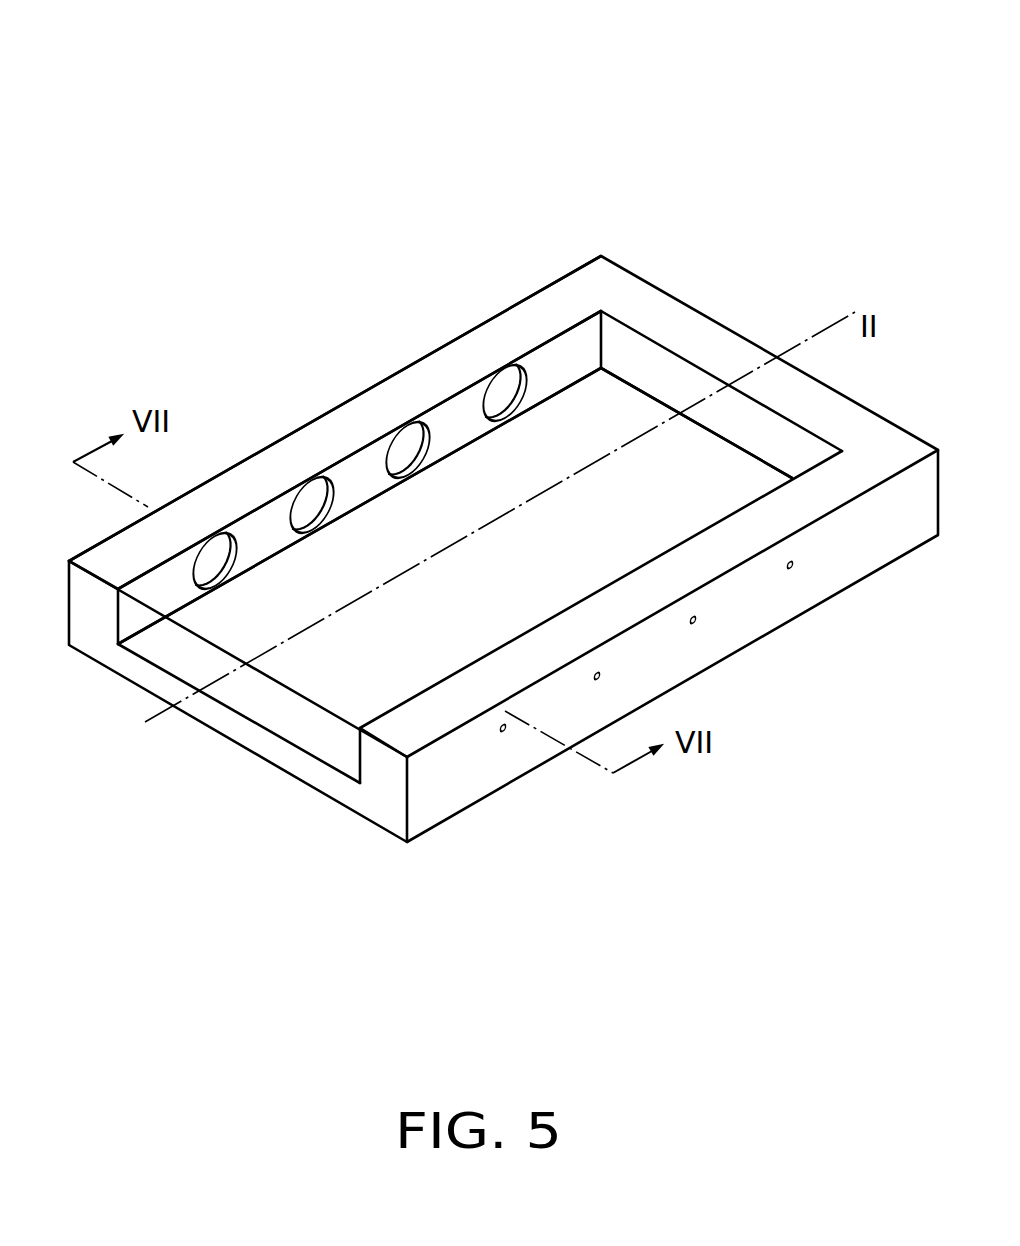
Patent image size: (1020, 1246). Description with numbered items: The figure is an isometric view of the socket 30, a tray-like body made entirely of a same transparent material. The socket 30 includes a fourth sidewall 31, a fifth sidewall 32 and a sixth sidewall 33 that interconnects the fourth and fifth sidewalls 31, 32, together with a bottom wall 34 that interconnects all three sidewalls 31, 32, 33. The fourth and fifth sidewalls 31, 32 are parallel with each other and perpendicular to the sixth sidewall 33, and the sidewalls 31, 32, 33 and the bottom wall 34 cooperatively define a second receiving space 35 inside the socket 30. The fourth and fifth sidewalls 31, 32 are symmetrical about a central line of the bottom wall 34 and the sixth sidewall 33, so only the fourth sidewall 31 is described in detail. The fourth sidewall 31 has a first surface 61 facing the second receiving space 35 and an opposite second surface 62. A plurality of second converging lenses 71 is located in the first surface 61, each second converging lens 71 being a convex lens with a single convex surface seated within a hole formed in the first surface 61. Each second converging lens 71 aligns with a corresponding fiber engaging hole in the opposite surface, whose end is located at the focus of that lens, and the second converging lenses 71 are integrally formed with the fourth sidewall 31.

The socket 30 is at (463, 75).
The fourth sidewall 31 is at (407, 383).
The fifth sidewall 32 is at (738, 545).
The sixth sidewall 33 is at (707, 342).
The bottom wall 34 is at (333, 722).
The second receiving space 35 is at (730, 463).
The first surface 61 is at (577, 343).
The second surface 62 is at (505, 307).
The second converging lenses 71 is at (207, 558).